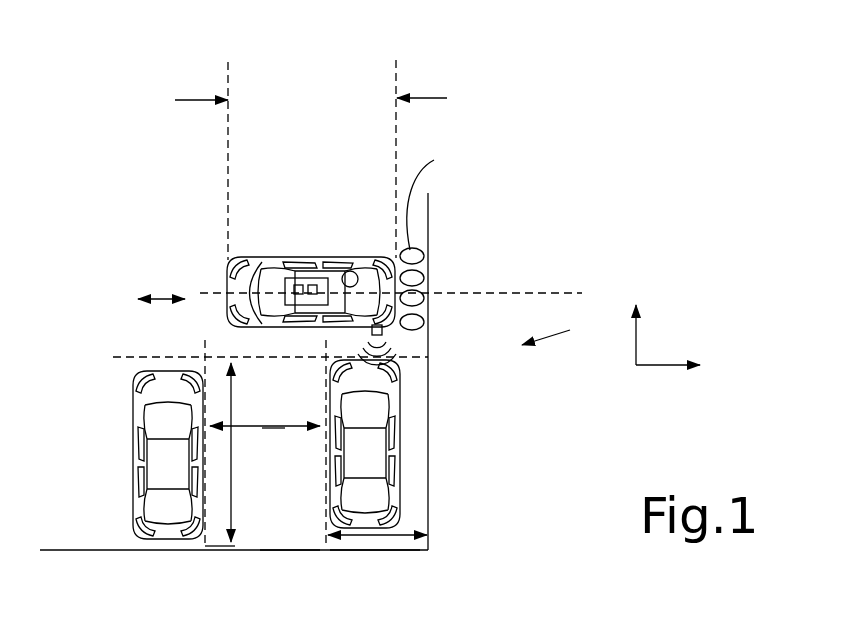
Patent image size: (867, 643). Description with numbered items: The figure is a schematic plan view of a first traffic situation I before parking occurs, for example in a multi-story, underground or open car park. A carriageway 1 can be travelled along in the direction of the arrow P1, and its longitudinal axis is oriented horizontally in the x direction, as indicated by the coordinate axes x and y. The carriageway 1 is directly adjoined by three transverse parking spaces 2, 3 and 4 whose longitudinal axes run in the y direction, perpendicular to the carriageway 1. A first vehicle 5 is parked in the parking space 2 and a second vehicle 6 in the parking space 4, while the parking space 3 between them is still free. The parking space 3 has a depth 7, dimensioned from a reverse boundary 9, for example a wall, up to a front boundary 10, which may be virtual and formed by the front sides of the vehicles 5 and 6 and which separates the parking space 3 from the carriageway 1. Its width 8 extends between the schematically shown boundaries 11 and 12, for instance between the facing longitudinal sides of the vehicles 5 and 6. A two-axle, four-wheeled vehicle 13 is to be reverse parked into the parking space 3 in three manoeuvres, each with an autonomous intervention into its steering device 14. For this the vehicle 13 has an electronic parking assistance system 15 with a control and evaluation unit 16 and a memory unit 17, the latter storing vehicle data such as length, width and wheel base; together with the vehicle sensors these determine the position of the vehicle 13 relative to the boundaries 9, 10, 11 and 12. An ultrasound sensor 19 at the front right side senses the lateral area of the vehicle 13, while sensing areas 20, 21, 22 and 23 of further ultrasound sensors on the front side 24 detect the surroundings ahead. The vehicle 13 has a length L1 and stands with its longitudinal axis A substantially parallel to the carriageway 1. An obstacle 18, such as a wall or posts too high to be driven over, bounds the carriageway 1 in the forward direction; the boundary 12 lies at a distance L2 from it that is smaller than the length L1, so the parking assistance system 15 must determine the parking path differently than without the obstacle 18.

The carriageway 1 is at (153, 258).
The transverse parking space 2 is at (110, 546).
The transverse parking space 3 is at (285, 540).
The transverse parking space 4 is at (360, 545).
The first vehicle 5 is at (125, 468).
The second vehicle 6 is at (408, 448).
The depth 7 is at (234, 388).
The width 8 is at (268, 432).
The reverse boundary 9 is at (228, 548).
The front boundary 10 is at (265, 409).
The boundary 11 is at (203, 356).
The boundary 12 is at (324, 370).
The vehicle 13 is at (311, 250).
The steering device 14 is at (352, 271).
The electronic parking assistance system 15 is at (283, 278).
The control and evaluation unit 16 is at (299, 283).
The memory unit 17 is at (313, 283).
The obstacle 18 is at (428, 200).
The ultrasound sensor 19 is at (390, 332).
The sensing area 20 is at (420, 322).
The sensing area 21 is at (420, 298).
The sensing area 22 is at (420, 278).
The sensing area 23 is at (420, 255).
The front side 24 is at (431, 194).
The length L1 is at (437, 97).
The distance L2 is at (393, 537).
The arrow P1 is at (162, 297).
The longitudinal axis A is at (565, 290).
The traffic situation I is at (551, 330).
The x direction x is at (678, 364).
The y direction y is at (632, 321).